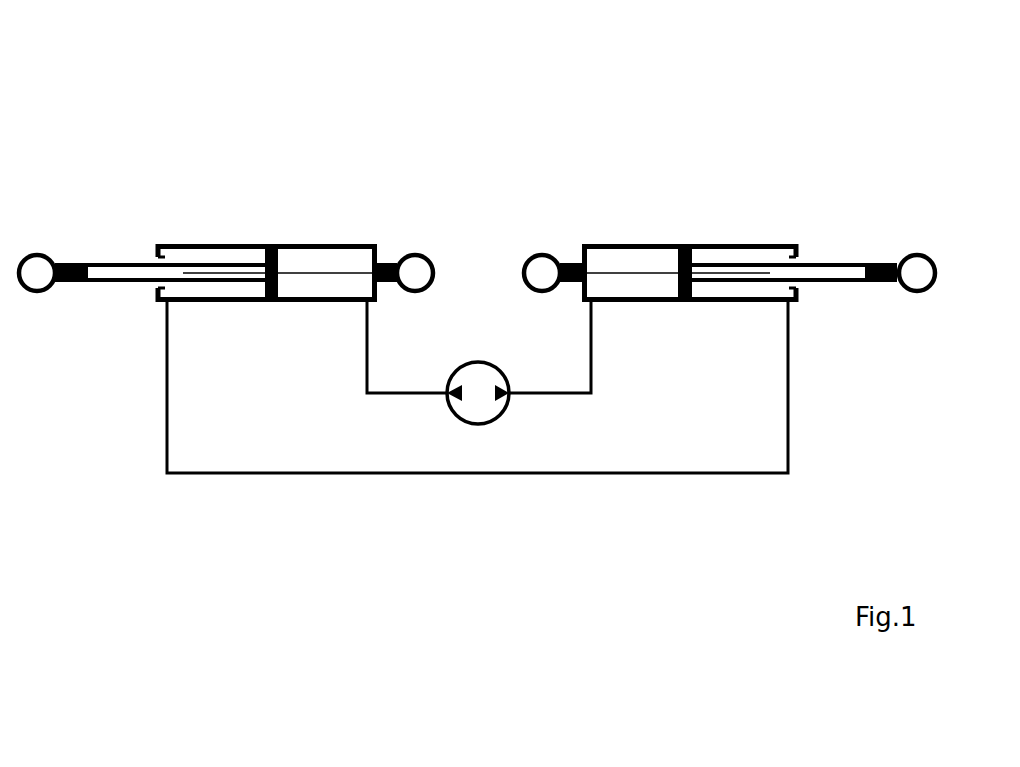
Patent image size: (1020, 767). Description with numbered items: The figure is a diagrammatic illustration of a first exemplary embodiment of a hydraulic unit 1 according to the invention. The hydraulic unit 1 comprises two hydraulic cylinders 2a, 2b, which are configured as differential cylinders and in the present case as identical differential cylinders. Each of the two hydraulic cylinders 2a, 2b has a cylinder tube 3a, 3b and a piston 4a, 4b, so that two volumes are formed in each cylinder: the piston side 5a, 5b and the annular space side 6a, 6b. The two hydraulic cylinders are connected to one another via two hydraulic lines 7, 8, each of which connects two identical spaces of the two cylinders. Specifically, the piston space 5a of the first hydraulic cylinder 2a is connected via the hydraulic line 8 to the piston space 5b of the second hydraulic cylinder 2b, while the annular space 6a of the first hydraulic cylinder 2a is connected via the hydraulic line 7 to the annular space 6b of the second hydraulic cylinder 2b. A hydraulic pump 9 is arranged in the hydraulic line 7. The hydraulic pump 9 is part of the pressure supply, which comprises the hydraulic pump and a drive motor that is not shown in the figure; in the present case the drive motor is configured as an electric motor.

The hydraulic unit 1 is at (480, 158).
The first hydraulic cylinder 2a is at (250, 243).
The second hydraulic cylinder 2b is at (670, 243).
The cylinder tube 3a is at (350, 262).
The cylinder tube 3b is at (790, 246).
The piston 4a is at (72, 286).
The piston 4b is at (890, 285).
The piston side 5a is at (186, 254).
The piston side 5b is at (752, 257).
The annular space side 6a is at (378, 258).
The annular space side 6b is at (607, 257).
The hydraulic line 7 is at (542, 397).
The hydraulic line 8 is at (652, 475).
The hydraulic pump 9 is at (477, 374).